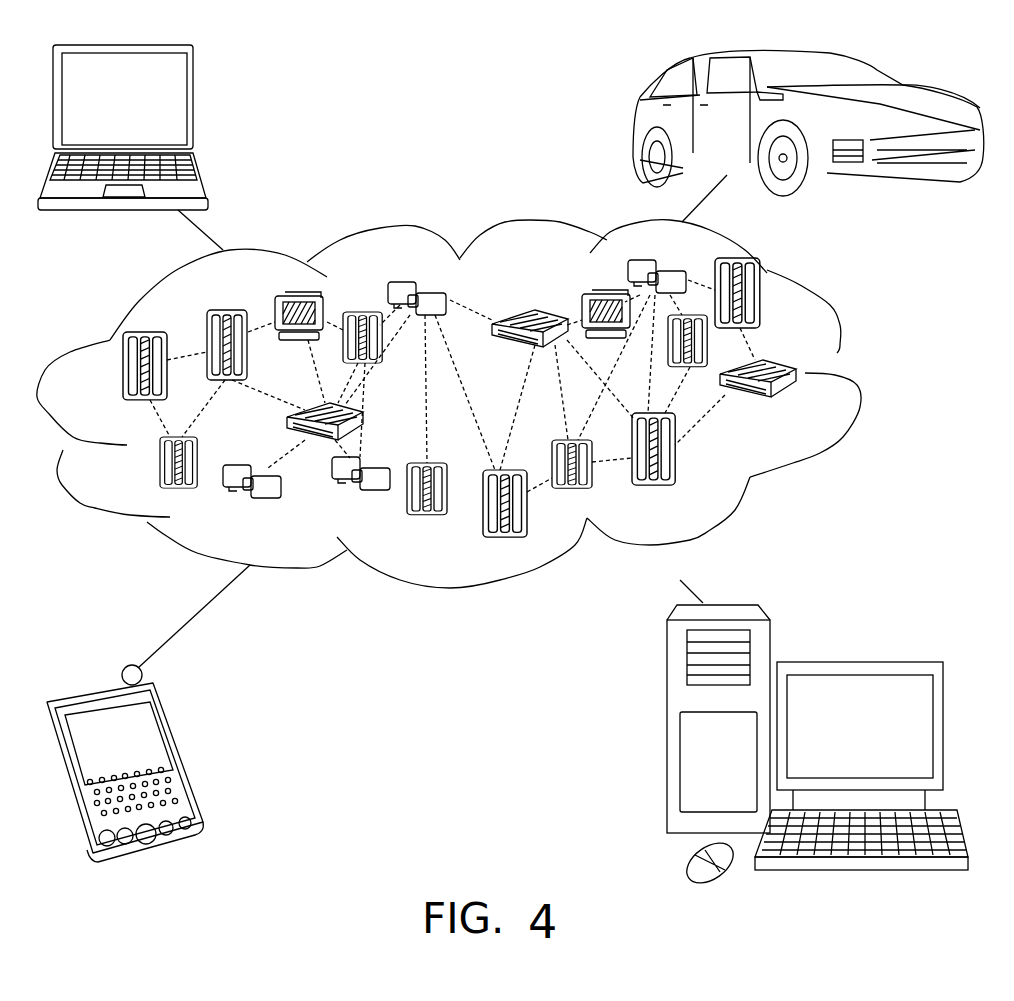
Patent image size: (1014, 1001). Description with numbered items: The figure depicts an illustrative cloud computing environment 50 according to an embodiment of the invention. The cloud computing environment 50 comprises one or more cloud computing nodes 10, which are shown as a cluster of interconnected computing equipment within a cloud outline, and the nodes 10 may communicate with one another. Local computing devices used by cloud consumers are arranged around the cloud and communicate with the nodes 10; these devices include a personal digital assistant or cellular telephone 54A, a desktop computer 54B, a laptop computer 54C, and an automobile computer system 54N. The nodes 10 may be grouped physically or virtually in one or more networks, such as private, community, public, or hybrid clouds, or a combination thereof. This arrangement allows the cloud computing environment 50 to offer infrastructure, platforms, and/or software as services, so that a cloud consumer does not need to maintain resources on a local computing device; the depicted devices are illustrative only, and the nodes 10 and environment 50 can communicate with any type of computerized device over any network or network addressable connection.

The cloud computing node 10 is at (798, 407).
The cloud computing environment 50 is at (860, 377).
The personal digital assistant or cellular telephone 54A is at (183, 757).
The desktop computer 54B is at (857, 660).
The laptop computer 54C is at (195, 108).
The automobile computer system 54N is at (633, 125).